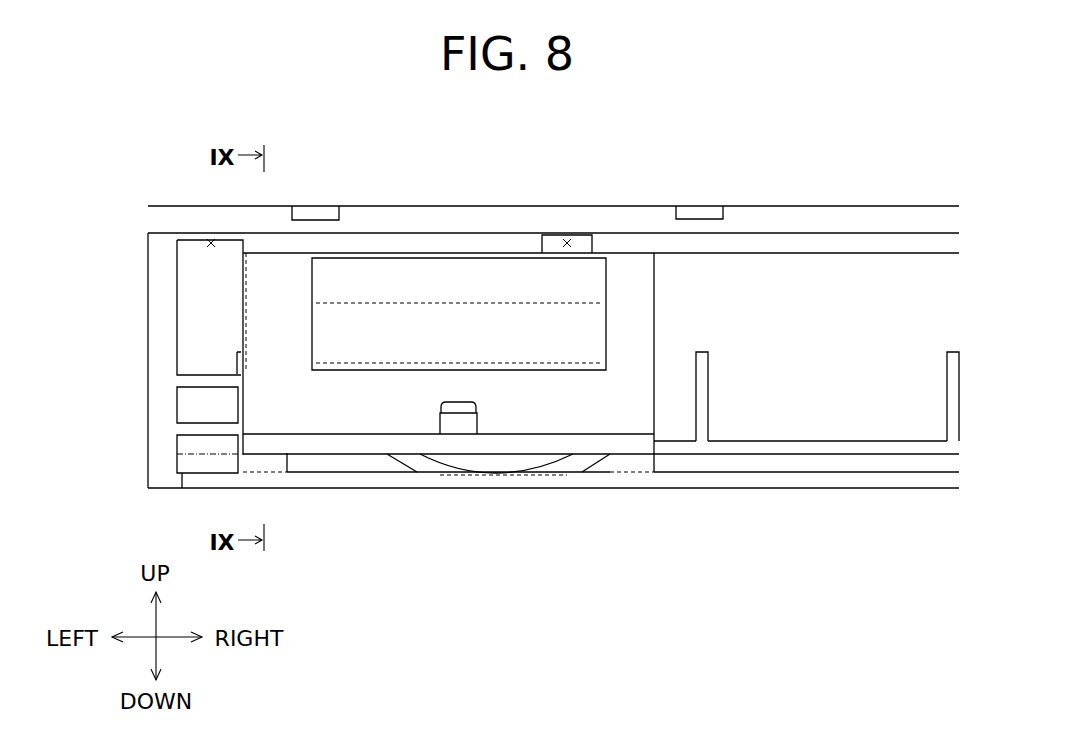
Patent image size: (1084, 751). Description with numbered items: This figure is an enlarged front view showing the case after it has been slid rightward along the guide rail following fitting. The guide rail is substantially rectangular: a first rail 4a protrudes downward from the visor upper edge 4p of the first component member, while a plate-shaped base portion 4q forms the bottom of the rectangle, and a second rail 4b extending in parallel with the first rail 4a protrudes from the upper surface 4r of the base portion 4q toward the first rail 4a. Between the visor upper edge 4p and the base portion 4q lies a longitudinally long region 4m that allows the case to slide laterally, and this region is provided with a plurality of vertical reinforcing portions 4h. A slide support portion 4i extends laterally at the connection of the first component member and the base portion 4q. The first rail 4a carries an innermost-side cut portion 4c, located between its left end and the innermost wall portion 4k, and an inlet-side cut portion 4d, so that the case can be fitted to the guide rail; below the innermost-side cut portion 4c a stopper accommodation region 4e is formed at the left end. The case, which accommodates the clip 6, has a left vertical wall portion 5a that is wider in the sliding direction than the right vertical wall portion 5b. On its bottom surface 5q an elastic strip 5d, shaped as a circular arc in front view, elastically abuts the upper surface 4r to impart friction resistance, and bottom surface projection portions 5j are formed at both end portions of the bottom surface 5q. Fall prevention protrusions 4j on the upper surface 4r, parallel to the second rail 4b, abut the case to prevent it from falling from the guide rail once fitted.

The first rail 4a is at (808, 243).
The second rail 4b is at (680, 476).
The innermost-side cut portion 4c is at (211, 241).
The inlet-side cut portion 4d is at (567, 243).
The stopper accommodation region 4e is at (203, 331).
The vertical reinforcing portions 4h is at (703, 387).
The slide support portion 4i is at (756, 447).
The fall prevention protrusion 4j is at (275, 463).
The innermost wall portion 4k is at (163, 297).
The region 4m is at (837, 339).
The visor upper edge 4p is at (877, 220).
The base portion 4q is at (833, 480).
The upper surface 4r is at (892, 472).
The left vertical wall portion 5a is at (272, 268).
The right vertical wall portion 5b is at (630, 270).
The elastic strip 5d is at (410, 465).
The bottom surface projection portions 5j is at (250, 463).
The bottom surface 5q is at (360, 457).
The clip 6 is at (452, 280).